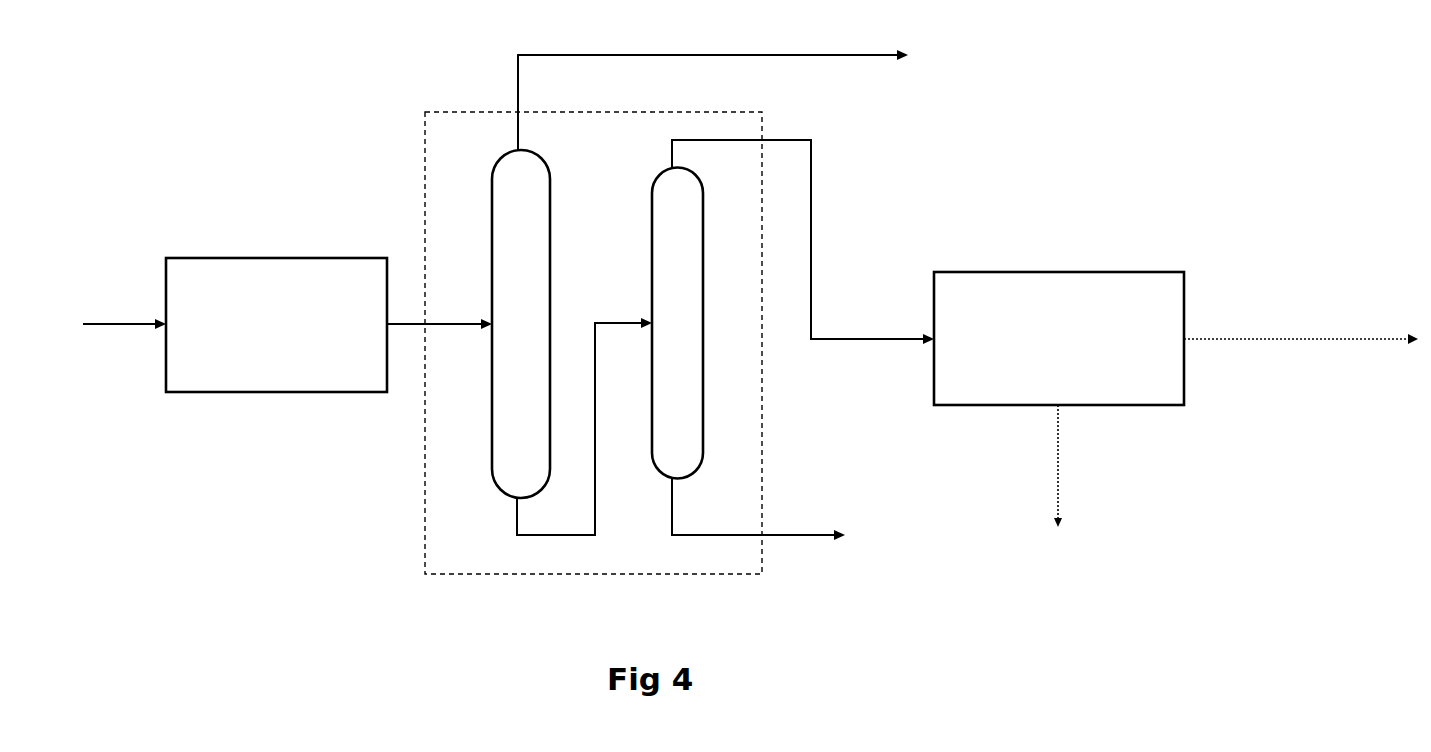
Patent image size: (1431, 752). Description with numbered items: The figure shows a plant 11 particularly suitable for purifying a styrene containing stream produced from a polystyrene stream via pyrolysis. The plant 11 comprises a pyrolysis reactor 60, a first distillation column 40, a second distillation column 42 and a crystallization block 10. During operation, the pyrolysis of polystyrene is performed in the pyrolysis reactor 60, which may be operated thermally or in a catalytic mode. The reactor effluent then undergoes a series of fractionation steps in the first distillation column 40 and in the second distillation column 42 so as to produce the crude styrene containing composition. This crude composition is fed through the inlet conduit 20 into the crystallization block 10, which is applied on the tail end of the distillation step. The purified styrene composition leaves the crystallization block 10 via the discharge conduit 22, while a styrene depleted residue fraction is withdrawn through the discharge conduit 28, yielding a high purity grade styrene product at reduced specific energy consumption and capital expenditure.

The crystallization block 10 is at (843, 269).
The plant 11 is at (265, 503).
The inlet conduit 20 is at (858, 340).
The discharge conduit 22 is at (1333, 337).
The discharge conduit 28 is at (1059, 463).
The first distillation column 40 is at (517, 147).
The second distillation column 42 is at (678, 166).
The pyrolysis reactor 60 is at (247, 257).